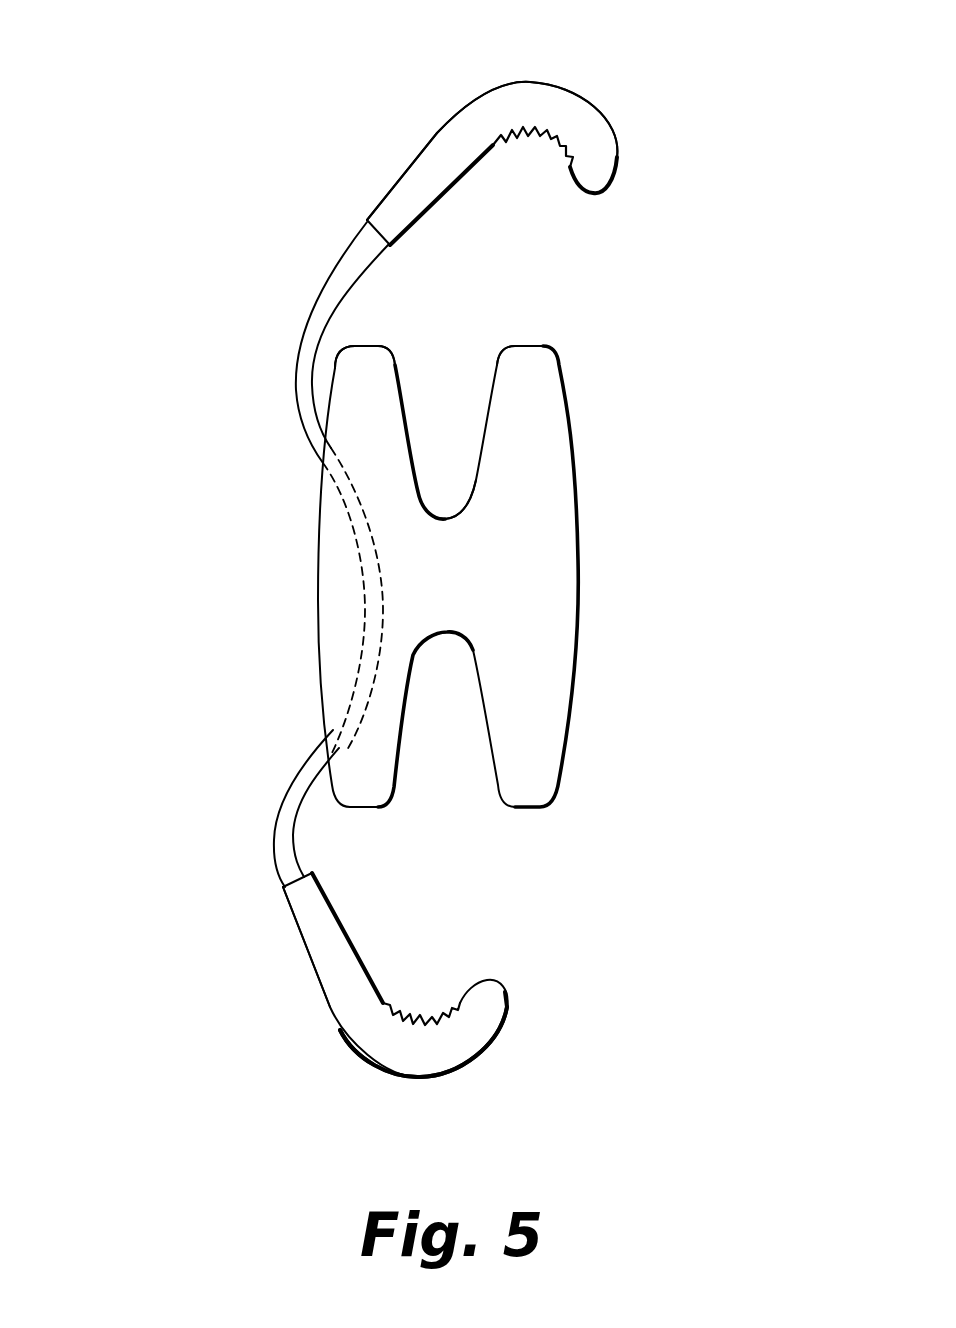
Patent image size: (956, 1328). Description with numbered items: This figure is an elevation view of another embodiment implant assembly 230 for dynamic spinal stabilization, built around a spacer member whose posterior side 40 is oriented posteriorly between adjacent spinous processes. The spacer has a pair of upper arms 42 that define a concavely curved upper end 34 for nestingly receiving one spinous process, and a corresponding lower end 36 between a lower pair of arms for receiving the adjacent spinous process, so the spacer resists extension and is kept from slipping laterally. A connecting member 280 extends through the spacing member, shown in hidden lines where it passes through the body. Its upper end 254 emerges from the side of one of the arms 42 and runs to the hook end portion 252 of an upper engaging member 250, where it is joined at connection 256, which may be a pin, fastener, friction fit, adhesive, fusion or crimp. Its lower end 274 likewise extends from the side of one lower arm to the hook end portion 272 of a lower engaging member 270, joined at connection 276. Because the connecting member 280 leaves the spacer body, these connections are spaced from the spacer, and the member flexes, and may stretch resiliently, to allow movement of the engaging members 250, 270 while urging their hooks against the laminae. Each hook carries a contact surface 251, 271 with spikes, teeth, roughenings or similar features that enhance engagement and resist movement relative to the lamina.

The implant assembly 230 is at (226, 562).
The posterior side 40 is at (540, 586).
The upper arms 42 is at (527, 357).
The upper end 34 is at (462, 514).
The lower end 36 is at (478, 650).
The connecting member 280 is at (362, 643).
The upper end 254 is at (300, 343).
The connection 256 is at (370, 229).
The engaging member 250 is at (436, 137).
The contact surface 251 is at (538, 142).
The hook end portion 252 is at (563, 100).
The lower end 274 is at (283, 780).
The connection 276 is at (285, 887).
The engaging member 270 is at (331, 1007).
The contact surface 271 is at (418, 1012).
The hook end portion 272 is at (430, 1074).